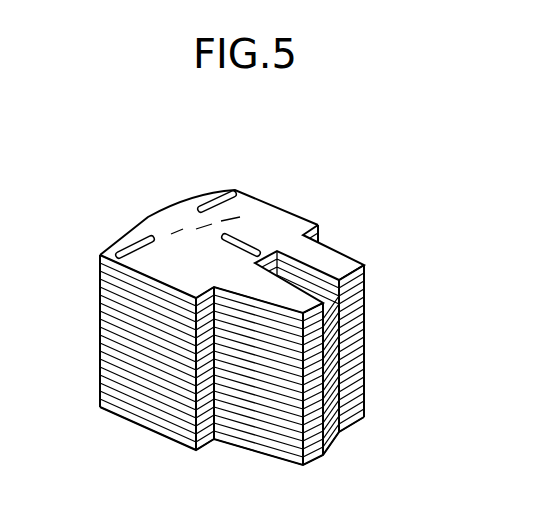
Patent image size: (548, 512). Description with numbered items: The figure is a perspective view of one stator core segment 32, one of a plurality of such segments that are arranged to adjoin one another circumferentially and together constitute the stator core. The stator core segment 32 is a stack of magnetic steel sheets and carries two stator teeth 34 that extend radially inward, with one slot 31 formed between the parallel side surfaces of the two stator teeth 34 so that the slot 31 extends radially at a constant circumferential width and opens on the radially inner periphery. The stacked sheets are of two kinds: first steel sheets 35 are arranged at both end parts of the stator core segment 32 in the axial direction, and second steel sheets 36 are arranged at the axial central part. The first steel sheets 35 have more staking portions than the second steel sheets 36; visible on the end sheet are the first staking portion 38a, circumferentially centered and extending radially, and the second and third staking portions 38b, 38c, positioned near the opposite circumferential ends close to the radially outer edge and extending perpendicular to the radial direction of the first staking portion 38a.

The stator core segment 32 is at (290, 172).
The slot 31 is at (303, 272).
The stator tooth 34 is at (341, 265).
The first steel sheet 35 is at (93, 255).
The second steel sheet 36 is at (93, 271).
The first staking portion 38a is at (252, 246).
The second staking portion 38b is at (147, 247).
The third staking portion 38c is at (208, 203).